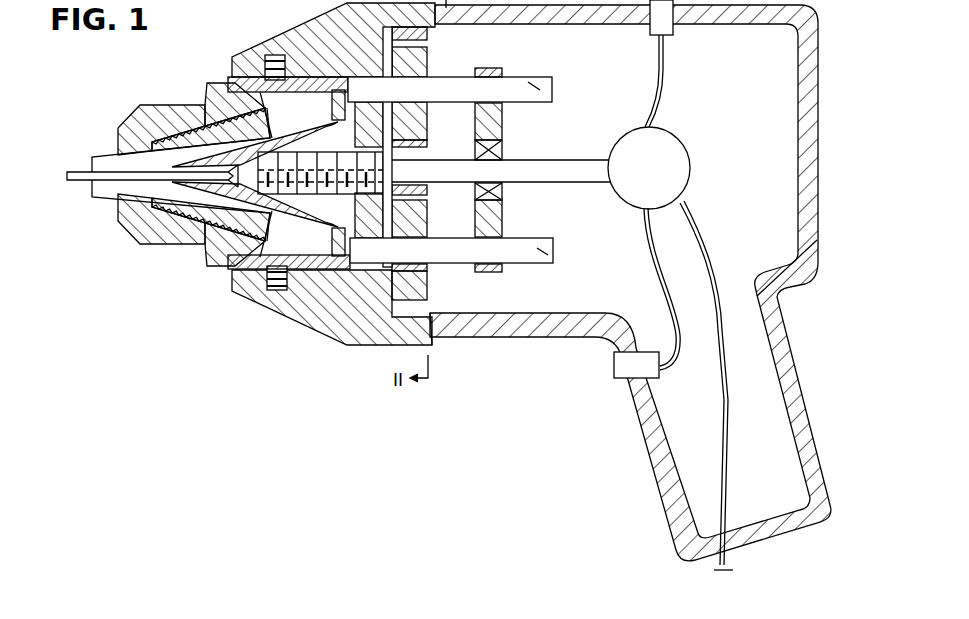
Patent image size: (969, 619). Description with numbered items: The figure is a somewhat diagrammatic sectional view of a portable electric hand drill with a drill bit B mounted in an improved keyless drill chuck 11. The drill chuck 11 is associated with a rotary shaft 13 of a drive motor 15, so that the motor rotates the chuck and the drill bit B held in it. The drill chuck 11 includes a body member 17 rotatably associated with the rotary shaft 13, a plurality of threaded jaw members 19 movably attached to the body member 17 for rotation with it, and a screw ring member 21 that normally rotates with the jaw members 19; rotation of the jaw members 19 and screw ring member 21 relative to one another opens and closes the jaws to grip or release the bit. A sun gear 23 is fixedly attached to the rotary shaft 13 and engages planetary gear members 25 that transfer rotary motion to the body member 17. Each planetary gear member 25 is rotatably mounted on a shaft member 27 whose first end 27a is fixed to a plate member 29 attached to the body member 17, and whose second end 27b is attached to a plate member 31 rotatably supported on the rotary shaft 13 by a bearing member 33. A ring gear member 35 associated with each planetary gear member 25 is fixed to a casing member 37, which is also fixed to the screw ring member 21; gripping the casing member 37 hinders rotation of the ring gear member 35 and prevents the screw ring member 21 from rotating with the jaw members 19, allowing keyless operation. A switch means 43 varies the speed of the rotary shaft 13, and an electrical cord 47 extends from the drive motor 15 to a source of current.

The keyless drill chuck 11 is at (108, 65).
The drill bit B is at (78, 183).
The rotary shaft 13 is at (577, 163).
The drive motor 15 is at (680, 163).
The body member 17 is at (133, 118).
The threaded jaw members 19 is at (112, 158).
The screw ring member 21 is at (213, 88).
The sun gear 23 is at (427, 143).
The planetary gear members 25 is at (428, 62).
The shaft member 27 is at (511, 76).
The first end of shaft member 27a is at (350, 32).
The second end of shaft member 27b is at (528, 82).
The plate member 29 is at (343, 30).
The plate member 31 is at (492, 122).
The bearing member 33 is at (495, 152).
The ring gear member 35 is at (440, 318).
The casing member 37 is at (248, 66).
The switch means 43 is at (622, 365).
The electrical cord 47 is at (717, 567).